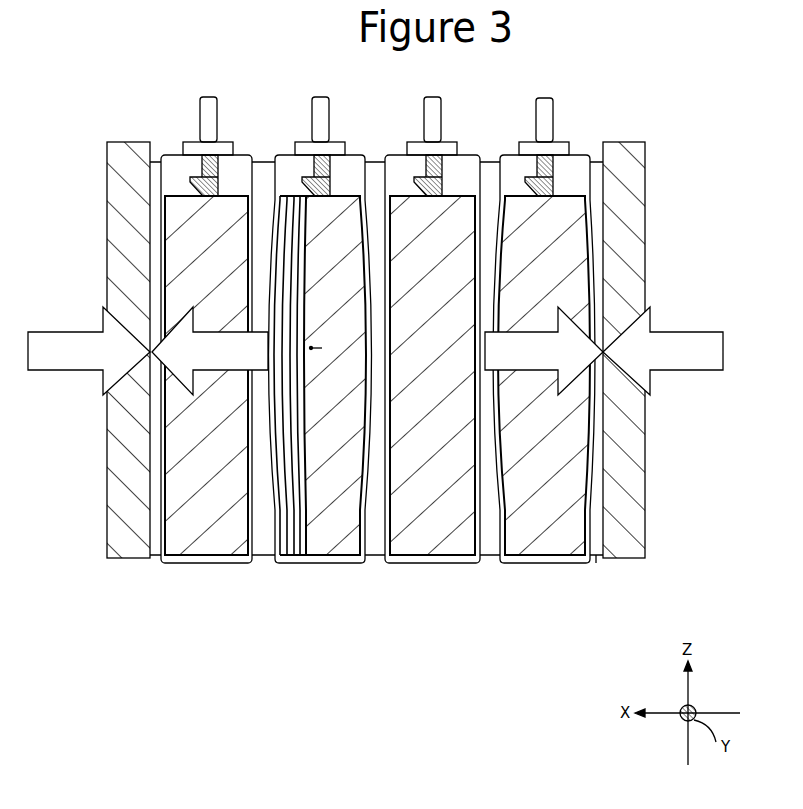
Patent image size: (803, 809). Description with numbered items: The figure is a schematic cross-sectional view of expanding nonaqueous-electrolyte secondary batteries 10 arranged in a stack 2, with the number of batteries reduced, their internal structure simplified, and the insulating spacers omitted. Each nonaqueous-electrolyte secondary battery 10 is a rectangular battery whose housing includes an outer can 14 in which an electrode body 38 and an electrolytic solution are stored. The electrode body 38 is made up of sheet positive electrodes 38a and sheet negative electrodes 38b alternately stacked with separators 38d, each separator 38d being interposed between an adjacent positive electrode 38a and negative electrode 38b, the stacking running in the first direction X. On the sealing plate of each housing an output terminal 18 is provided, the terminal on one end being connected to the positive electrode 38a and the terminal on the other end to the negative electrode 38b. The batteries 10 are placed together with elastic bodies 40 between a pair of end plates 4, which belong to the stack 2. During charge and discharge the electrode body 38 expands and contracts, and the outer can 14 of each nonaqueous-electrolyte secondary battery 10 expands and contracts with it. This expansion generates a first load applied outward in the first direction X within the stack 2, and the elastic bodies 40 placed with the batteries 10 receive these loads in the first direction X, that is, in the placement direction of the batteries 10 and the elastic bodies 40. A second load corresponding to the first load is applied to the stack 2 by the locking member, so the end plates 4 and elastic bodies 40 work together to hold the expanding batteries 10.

The stack 2 is at (375, 371).
The end plate 4 is at (645, 533).
The nonaqueous-electrolyte secondary battery 10 is at (597, 353).
The outer can 14 is at (587, 185).
The output terminal 18 is at (555, 113).
The electrode body 38 is at (593, 283).
The positive electrode 38a is at (286, 563).
The negative electrode 38b is at (306, 563).
The separator 38d is at (296, 563).
The elastic body 40 is at (595, 562).